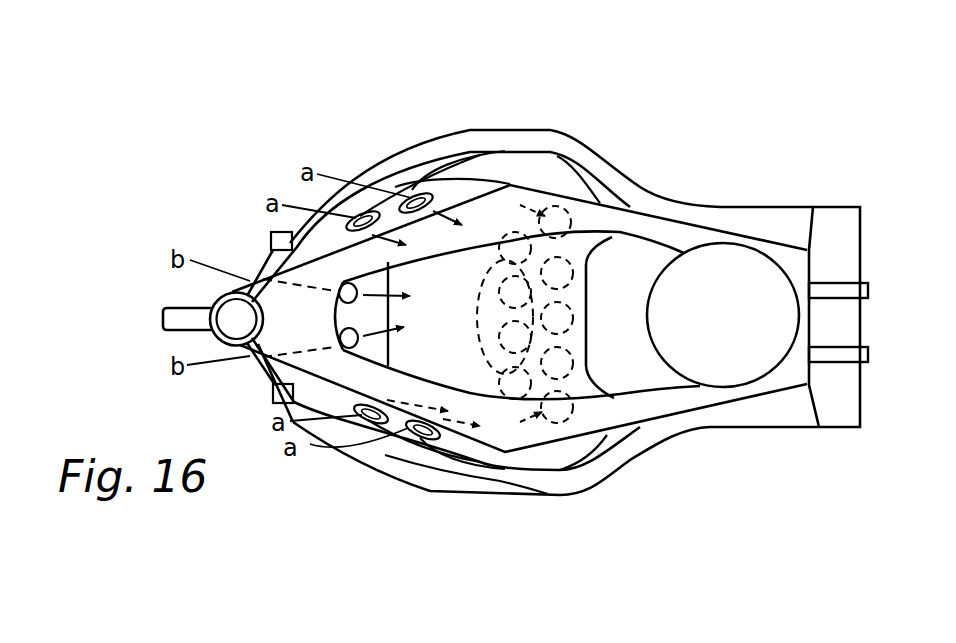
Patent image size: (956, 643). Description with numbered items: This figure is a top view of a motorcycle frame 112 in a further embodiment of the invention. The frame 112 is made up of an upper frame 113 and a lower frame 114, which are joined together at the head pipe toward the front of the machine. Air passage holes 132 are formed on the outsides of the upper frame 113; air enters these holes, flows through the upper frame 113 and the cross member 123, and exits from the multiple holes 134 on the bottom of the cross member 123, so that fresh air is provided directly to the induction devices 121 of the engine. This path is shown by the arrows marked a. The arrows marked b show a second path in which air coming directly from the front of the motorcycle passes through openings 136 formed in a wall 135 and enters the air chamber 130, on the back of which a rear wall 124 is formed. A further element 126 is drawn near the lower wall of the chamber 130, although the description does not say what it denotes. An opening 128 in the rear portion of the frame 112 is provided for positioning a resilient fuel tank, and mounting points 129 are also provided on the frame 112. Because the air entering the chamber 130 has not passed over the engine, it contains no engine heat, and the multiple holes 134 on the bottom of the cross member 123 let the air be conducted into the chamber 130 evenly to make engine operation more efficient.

The frame 112 is at (699, 141).
The upper frame 113 is at (507, 203).
The lower frame 114 is at (521, 129).
The induction device 121 is at (480, 317).
The cross member 123 is at (603, 278).
The rear wall 124 is at (636, 338).
The liner wall 126 is at (418, 356).
The opening 128 is at (713, 354).
The mounting points 129 is at (271, 232).
The air chamber 130 is at (462, 341).
The air passage holes 132 is at (412, 202).
The holes 134 is at (600, 315).
The wall 135 is at (249, 318).
The openings 136 is at (346, 289).